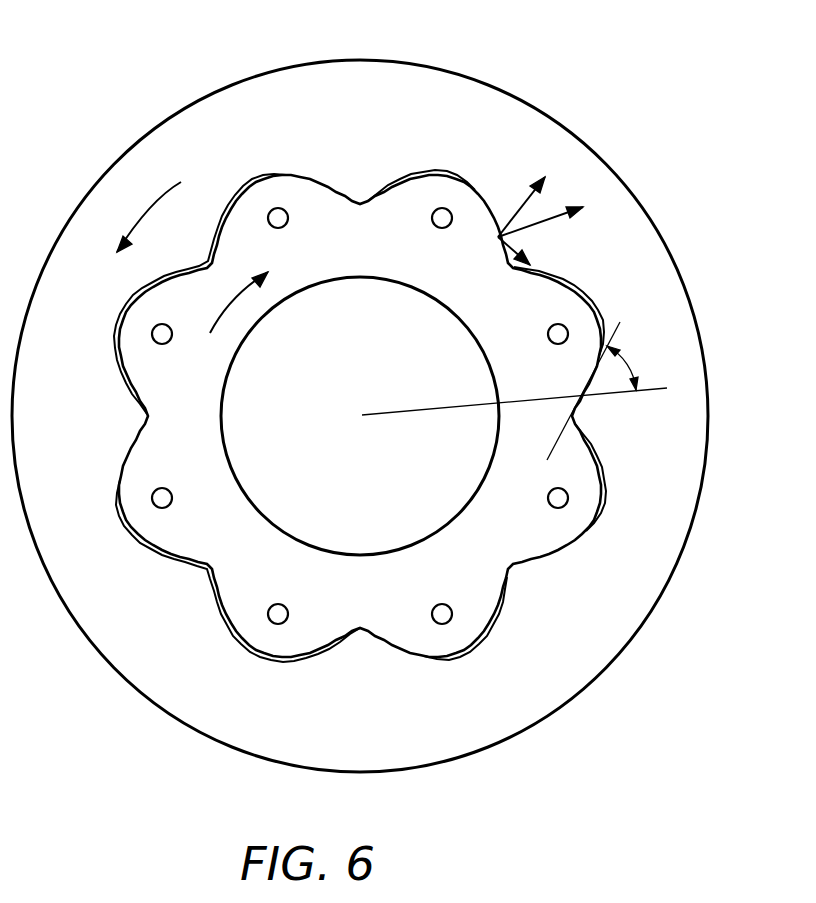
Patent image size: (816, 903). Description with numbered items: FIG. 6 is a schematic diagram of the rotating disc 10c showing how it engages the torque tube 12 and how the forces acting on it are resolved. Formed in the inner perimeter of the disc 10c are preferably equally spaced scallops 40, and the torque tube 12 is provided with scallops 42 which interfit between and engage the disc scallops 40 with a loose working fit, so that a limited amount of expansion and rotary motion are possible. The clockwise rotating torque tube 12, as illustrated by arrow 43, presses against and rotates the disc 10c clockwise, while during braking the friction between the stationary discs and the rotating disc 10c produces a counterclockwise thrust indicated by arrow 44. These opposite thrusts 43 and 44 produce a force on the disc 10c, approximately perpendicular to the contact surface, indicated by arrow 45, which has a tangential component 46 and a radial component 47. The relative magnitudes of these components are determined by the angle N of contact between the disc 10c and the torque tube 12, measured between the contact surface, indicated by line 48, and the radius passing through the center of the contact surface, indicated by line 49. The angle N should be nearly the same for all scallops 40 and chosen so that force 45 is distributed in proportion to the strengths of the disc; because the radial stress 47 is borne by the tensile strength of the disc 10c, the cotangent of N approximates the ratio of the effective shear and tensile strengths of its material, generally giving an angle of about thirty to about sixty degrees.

The rotating disc 10c is at (643, 583).
The torque tube 12 is at (512, 452).
The scallops 40 is at (362, 202).
The scallops 42 is at (422, 190).
The arrow 43 is at (225, 312).
The arrow 44 is at (152, 207).
The arrow 45 is at (552, 217).
The tangential component 46 is at (497, 242).
The radial component 47 is at (515, 207).
The line 48 is at (620, 322).
The line 49 is at (623, 393).